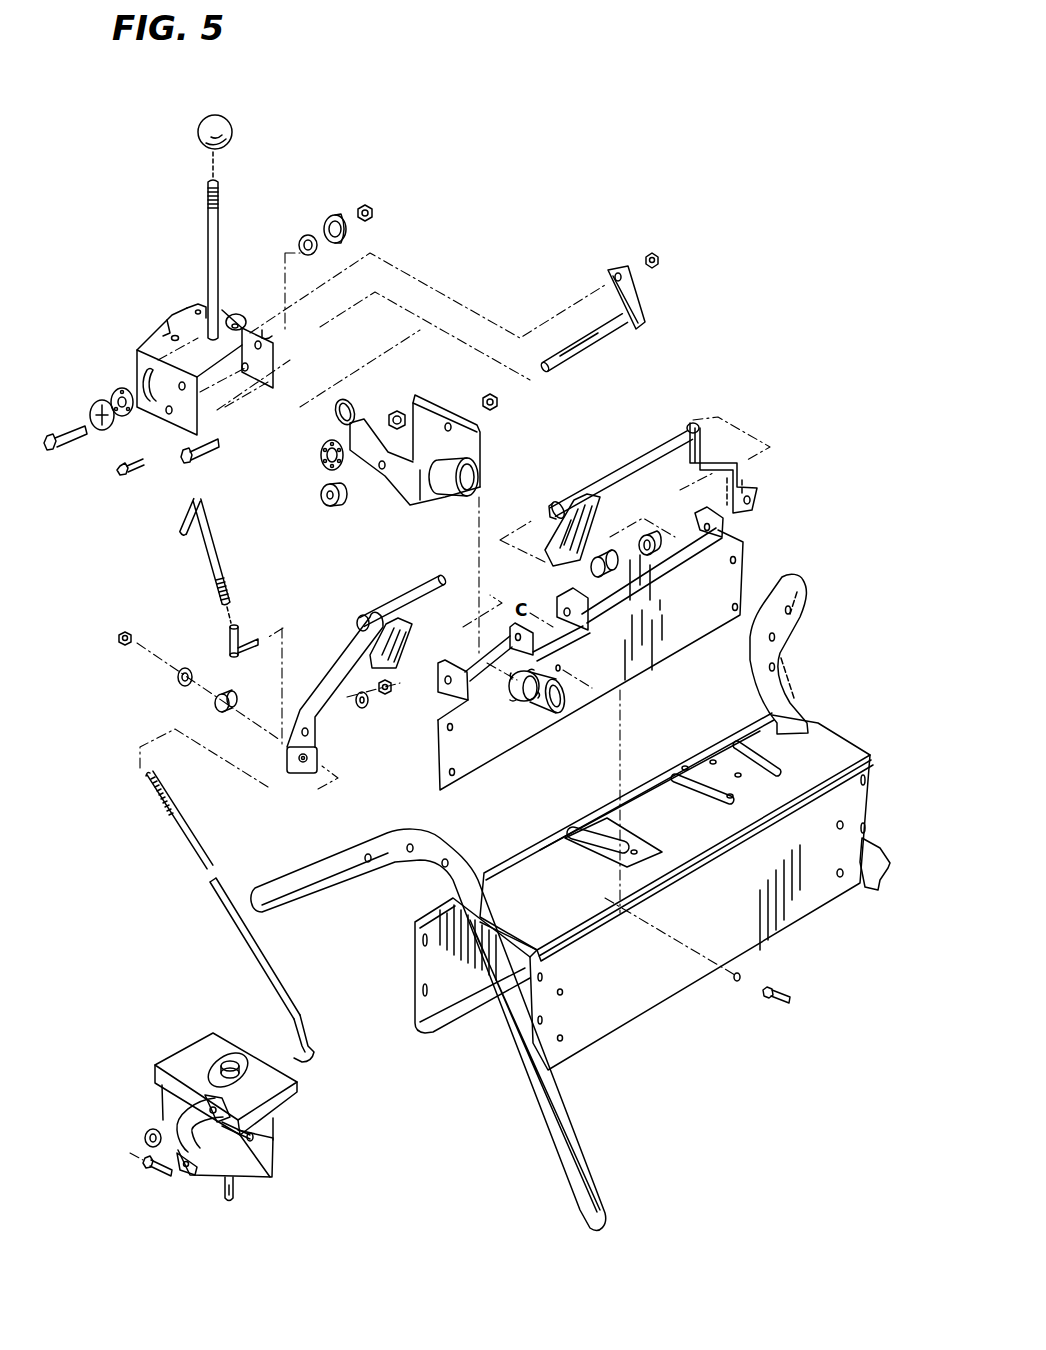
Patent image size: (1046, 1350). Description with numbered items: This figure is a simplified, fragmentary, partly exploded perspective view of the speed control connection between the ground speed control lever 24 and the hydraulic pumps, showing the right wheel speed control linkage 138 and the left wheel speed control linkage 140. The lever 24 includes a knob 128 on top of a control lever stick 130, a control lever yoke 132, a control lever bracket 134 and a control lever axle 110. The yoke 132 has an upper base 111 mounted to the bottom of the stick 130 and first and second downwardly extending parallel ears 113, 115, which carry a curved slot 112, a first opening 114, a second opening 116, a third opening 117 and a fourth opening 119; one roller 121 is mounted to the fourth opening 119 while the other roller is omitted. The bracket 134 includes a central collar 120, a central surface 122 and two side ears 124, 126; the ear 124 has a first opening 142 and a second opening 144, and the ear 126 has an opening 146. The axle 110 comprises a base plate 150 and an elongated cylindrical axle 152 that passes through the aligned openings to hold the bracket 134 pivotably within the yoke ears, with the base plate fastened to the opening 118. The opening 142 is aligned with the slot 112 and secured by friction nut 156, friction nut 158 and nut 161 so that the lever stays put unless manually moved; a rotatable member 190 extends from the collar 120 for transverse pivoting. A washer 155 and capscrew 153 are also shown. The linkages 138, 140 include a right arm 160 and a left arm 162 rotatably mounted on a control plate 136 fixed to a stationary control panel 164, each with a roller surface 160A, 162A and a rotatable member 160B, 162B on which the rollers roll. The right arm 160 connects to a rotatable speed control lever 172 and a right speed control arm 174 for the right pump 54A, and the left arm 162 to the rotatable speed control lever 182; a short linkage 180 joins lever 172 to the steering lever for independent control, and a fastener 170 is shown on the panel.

The ground speed control lever 24 is at (235, 200).
The knob 128 is at (200, 124).
The control lever stick 130 is at (208, 238).
The roller 121 is at (331, 215).
The control lever axle 110 is at (597, 260).
The base plate 150 is at (634, 300).
The elongated cylindrical axle 152 is at (600, 340).
The control lever yoke 132 is at (160, 303).
The upper base 111 is at (200, 302).
The opening 118 is at (240, 314).
The fourth opening 119 is at (280, 325).
The third opening 117 is at (171, 338).
The second downwardly extending ear 115 is at (282, 346).
The second opening 116 is at (278, 367).
The friction nut 156 is at (118, 390).
The spring washer 155 is at (95, 403).
The bolt 153 is at (64, 447).
The curved path control opening or slot 112 is at (152, 402).
The first downwardly extending ear 113 is at (163, 412).
The first opening 114 is at (170, 415).
The nut 161 is at (397, 410).
The side ear 126 is at (423, 410).
The opening 146 is at (451, 424).
The control lever bracket 134 is at (497, 464).
The first opening 142 is at (335, 415).
The friction nut 158 is at (321, 465).
The side ear 124 is at (338, 506).
The central collar 120 is at (441, 472).
The second opening 144 is at (385, 472).
The central surface 122 is at (425, 492).
The left wheel speed control linkage 140 is at (780, 377).
The rotatable member 162B is at (652, 450).
The rotatable speed control lever 182 is at (737, 465).
The left arm 162 is at (605, 522).
The roller surface 162A is at (545, 563).
The control plate 136 is at (730, 577).
The short linkage 180 is at (208, 550).
The rotatable member 160B is at (397, 597).
The right arm 160 is at (422, 605).
The roller surface 160A is at (400, 630).
The rotatable speed control lever 172 is at (333, 683).
The right wheel speed control linkage 138 is at (155, 682).
The rotatable member 190 is at (525, 706).
The stationary control panel 164 is at (843, 800).
The handle 170 is at (670, 937).
The right speed control arm 174 is at (192, 849).
The right pump 54A is at (297, 1074).